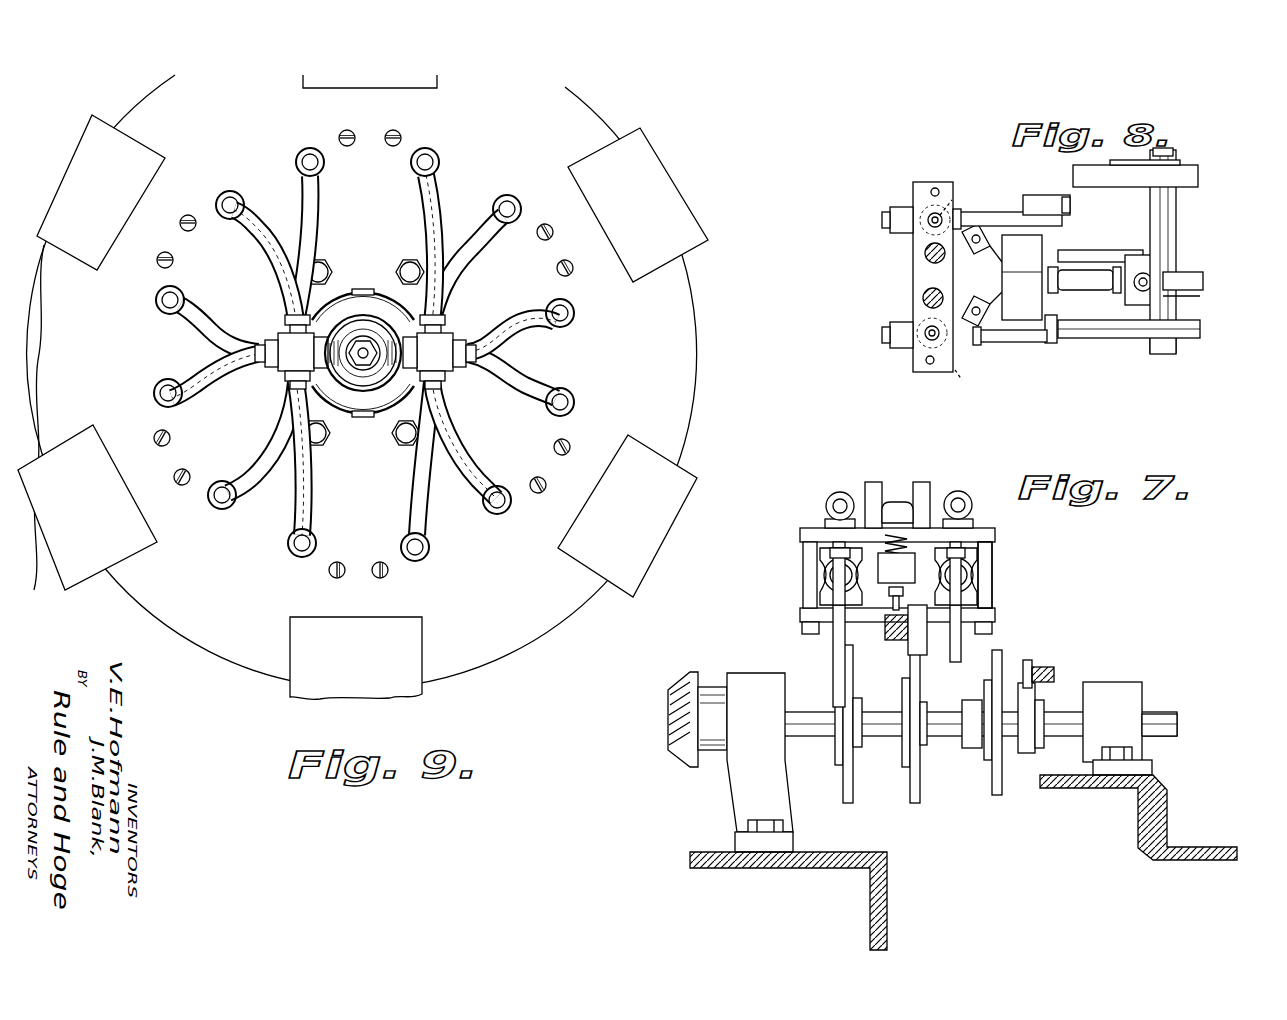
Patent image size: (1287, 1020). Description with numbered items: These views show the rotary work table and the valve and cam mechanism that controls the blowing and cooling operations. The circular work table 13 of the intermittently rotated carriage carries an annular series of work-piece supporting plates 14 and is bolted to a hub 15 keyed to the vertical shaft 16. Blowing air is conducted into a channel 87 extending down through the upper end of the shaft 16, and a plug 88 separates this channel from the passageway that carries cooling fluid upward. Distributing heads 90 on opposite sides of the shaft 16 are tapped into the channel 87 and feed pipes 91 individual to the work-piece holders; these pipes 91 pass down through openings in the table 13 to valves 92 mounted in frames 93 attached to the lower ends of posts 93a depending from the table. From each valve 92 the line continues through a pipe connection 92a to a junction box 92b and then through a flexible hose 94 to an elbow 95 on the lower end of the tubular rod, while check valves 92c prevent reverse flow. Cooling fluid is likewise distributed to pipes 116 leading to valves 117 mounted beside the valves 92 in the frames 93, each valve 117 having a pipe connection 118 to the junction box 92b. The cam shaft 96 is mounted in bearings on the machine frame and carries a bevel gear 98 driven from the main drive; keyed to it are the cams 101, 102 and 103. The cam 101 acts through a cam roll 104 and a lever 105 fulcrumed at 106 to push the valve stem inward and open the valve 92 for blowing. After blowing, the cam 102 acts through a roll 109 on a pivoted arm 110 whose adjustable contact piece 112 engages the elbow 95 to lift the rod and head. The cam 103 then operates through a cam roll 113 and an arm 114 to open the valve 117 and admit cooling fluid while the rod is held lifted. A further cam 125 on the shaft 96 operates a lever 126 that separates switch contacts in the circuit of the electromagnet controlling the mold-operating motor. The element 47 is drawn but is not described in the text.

In FIG. 9, the circular work table 13 is at (698, 330).
In FIG. 9, the work-piece supporting plates 14 is at (84, 262).
In FIG. 9, the hub 15 is at (412, 320).
In FIG. 9, the vertical shaft 16 is at (361, 380).
In FIG. 8, the shaft / block 47 is at (1200, 280).
In FIG. 7, the shaft / block 47 is at (905, 560).
In FIG. 9, the channel 87 is at (360, 338).
In FIG. 9, the plug 88 is at (366, 340).
In FIG. 9, the distributing heads 90 is at (292, 358).
In FIG. 9, the pipes 91 is at (262, 232).
In FIG. 8, the valves 92 is at (900, 352).
In FIG. 7, the valves 92 is at (822, 574).
In FIG. 8, the pipe connection 92a is at (965, 385).
In FIG. 8, the junction box 92b is at (1035, 250).
In FIG. 8, the check valves 92c is at (975, 326).
In FIG. 8, the frames 93 is at (920, 272).
In FIG. 7, the frames 93 is at (985, 535).
In FIG. 8, the posts 93a is at (924, 253).
In FIG. 7, the posts 93a is at (870, 490).
In FIG. 8, the flexible hose 94 is at (1100, 284).
In FIG. 8, the elbow 95 is at (1177, 298).
In FIG. 7, the elbow 95 is at (962, 495).
In FIG. 8, the cam shaft 96 is at (1177, 212).
In FIG. 7, the cam shaft 96 is at (800, 716).
In FIG. 7, the bevel gear 98 is at (680, 683).
In FIG. 8, the cam 101 is at (1195, 340).
In FIG. 7, the cam 101 is at (846, 800).
In FIG. 8, the cam 102 is at (1115, 250).
In FIG. 7, the cam 102 is at (914, 800).
In FIG. 8, the cam 103 is at (1190, 172).
In FIG. 7, the cam 103 is at (994, 792).
In FIG. 8, the cam roll 104 is at (1052, 335).
In FIG. 7, the cam roll 104 is at (858, 745).
In FIG. 8, the lever 105 is at (1022, 342).
In FIG. 7, the lever 105 is at (833, 645).
In FIG. 7, the fulcrum 106 is at (825, 557).
In FIG. 8, the roll 109 is at (1165, 260).
In FIG. 7, the roll 109 is at (912, 650).
In FIG. 8, the arm 110 is at (1165, 280).
In FIG. 7, the arm 110 is at (885, 636).
In FIG. 7, the adjustable contact piece 112 is at (888, 600).
In FIG. 8, the cam roll 113 is at (1036, 202).
In FIG. 7, the cam roll 113 is at (958, 740).
In FIG. 8, the arm 114 is at (1012, 212).
In FIG. 7, the arm 114 is at (962, 650).
In FIG. 9, the pipes 116 is at (316, 195).
In FIG. 8, the valves 117 is at (910, 212).
In FIG. 7, the valves 117 is at (975, 573).
In FIG. 8, the pipe connection 118 is at (952, 198).
In FIG. 7, the cam 125 is at (1028, 705).
In FIG. 7, the lever 126 is at (1045, 668).